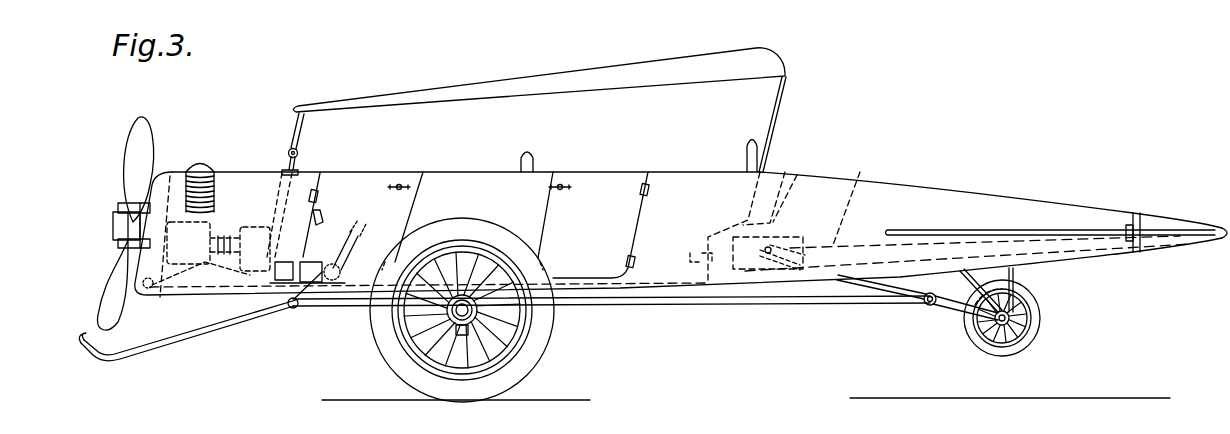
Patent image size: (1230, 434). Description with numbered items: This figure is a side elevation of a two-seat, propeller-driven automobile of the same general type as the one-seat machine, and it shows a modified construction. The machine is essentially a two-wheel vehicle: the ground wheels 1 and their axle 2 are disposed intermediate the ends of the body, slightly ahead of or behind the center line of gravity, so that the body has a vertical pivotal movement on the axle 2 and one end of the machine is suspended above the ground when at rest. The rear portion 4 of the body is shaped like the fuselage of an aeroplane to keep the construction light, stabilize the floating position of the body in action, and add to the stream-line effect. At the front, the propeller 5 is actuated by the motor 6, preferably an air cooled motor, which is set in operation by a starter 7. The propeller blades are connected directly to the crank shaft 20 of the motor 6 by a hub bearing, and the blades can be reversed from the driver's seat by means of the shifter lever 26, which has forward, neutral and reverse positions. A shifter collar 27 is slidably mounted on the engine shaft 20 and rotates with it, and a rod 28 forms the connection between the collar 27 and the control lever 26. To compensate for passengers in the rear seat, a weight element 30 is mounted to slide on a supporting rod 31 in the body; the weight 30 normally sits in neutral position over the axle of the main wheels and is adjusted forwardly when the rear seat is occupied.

The ground wheels 1 is at (372, 342).
The axle 2 is at (478, 353).
The rear portion of the body 4 is at (783, 176).
The propeller 5 is at (146, 130).
The motor 6 is at (207, 167).
The starter 7 is at (248, 227).
The crank shaft 20 is at (113, 226).
The shifter lever 26 is at (322, 216).
The shifter collar 27 is at (169, 219).
The rod 28 is at (213, 297).
The weight element 30 is at (765, 290).
The supporting rod 31 is at (852, 196).